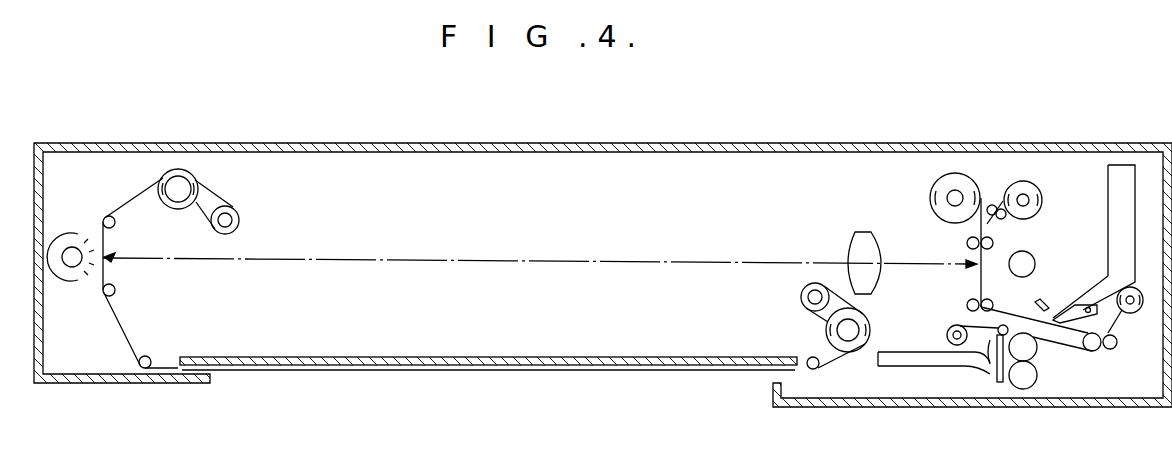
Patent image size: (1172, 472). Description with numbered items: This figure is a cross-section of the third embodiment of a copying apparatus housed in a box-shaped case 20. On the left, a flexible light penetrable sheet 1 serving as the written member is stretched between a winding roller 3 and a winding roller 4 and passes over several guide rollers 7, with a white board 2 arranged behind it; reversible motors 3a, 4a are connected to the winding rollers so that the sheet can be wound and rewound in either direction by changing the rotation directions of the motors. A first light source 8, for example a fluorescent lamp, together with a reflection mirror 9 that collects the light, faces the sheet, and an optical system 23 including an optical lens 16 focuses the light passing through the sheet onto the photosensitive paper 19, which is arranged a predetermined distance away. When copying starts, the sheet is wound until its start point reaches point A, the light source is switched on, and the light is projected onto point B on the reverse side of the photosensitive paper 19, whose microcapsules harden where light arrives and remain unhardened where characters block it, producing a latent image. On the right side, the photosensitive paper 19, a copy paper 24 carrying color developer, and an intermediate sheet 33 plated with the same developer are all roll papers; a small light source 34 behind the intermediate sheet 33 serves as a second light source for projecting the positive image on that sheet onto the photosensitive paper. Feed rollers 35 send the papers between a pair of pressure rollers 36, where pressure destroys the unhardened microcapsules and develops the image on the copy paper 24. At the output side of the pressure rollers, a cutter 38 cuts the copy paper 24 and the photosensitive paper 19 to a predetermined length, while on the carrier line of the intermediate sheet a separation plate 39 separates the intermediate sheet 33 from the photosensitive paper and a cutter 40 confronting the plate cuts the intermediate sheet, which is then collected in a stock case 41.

The light penetrable sheet 1 is at (233, 366).
The white board 2 is at (442, 370).
The winding roller 3 is at (184, 171).
The reversible motor 3a is at (232, 207).
The winding roller 4 is at (857, 352).
The reversible motor 4a is at (803, 301).
The guide rollers 7 is at (111, 216).
The first light source 8 is at (78, 247).
The reflection mirror 9 is at (63, 237).
The optical lens 16 is at (856, 253).
The photosensitive paper 19 is at (957, 173).
The case 20 is at (50, 340).
The optical system 23 is at (483, 261).
The copy paper 24 is at (1136, 312).
The intermediate sheet 33 is at (1033, 191).
The small light source 34 is at (1030, 254).
The feed rollers 35 is at (992, 205).
The pressure rollers 36 is at (1026, 389).
The cutter 38 is at (1000, 383).
The separation plate 39 is at (1077, 305).
The cutter 40 is at (1045, 306).
The stock case 41 is at (1137, 170).
The point A is at (110, 254).
The point B is at (977, 268).